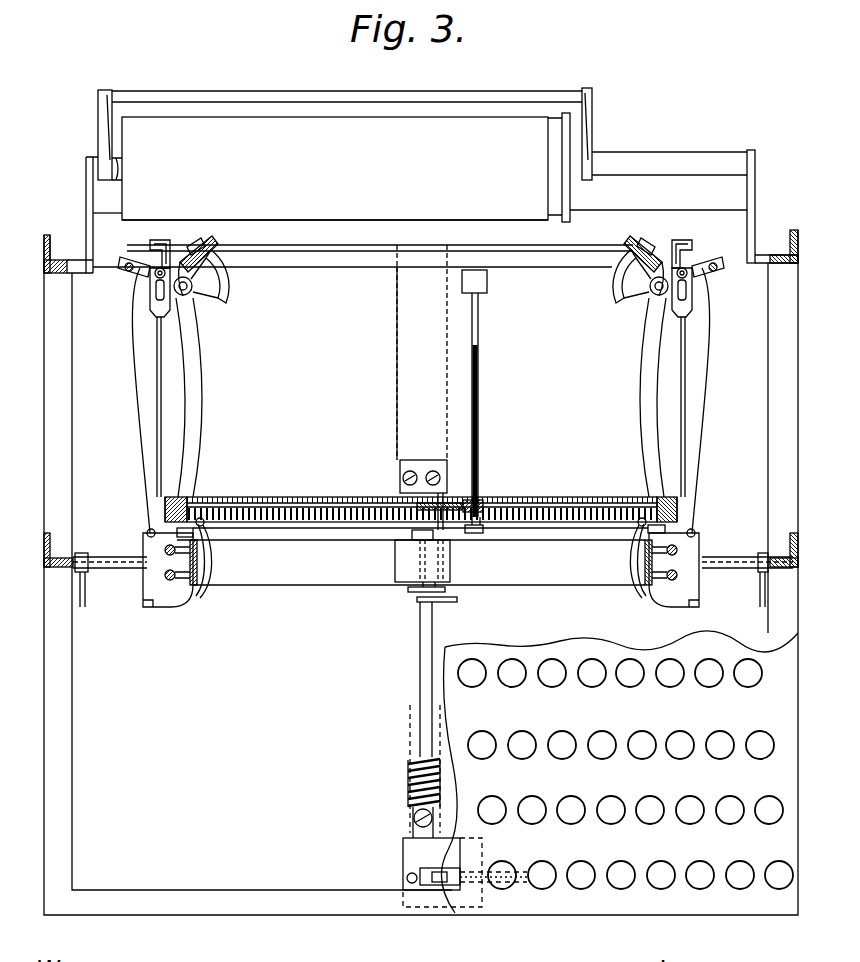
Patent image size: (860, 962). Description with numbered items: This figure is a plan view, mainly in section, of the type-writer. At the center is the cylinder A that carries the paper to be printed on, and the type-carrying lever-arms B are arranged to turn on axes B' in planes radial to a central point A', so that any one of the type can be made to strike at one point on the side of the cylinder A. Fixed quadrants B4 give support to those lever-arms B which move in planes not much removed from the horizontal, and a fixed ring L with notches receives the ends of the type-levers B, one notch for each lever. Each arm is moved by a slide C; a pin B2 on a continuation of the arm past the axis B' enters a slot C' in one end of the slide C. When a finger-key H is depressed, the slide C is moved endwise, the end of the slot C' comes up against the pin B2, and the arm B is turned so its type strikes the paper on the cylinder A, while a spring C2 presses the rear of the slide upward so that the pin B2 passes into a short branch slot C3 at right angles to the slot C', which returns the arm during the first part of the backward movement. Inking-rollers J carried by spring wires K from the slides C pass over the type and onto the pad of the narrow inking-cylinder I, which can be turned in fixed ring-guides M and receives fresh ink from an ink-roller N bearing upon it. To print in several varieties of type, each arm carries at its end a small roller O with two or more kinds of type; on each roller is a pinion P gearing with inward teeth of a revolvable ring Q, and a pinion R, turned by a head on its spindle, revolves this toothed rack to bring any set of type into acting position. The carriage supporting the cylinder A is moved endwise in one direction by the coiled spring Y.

The cylinder A is at (335, 168).
The central point A' is at (335, 208).
The lever-arms B is at (421, 393).
The axes B' is at (421, 292).
The pin B2 is at (690, 272).
The fixed quadrants B4 is at (617, 313).
The slides C is at (426, 382).
The slot C' is at (421, 248).
The spring C2 is at (709, 304).
The branch slot C3 is at (690, 248).
The finger-keys H is at (625, 774).
The inking-cylinder I is at (566, 584).
The inking-rollers J is at (638, 524).
The spring wires K is at (421, 570).
The fixed ring L is at (563, 501).
The fixed ring-guides M is at (421, 558).
The ink-roller N is at (451, 557).
The small roller O is at (667, 529).
The pinion P is at (666, 506).
The ring Q is at (680, 512).
The pinion R is at (450, 505).
The coiled spring Y is at (455, 833).